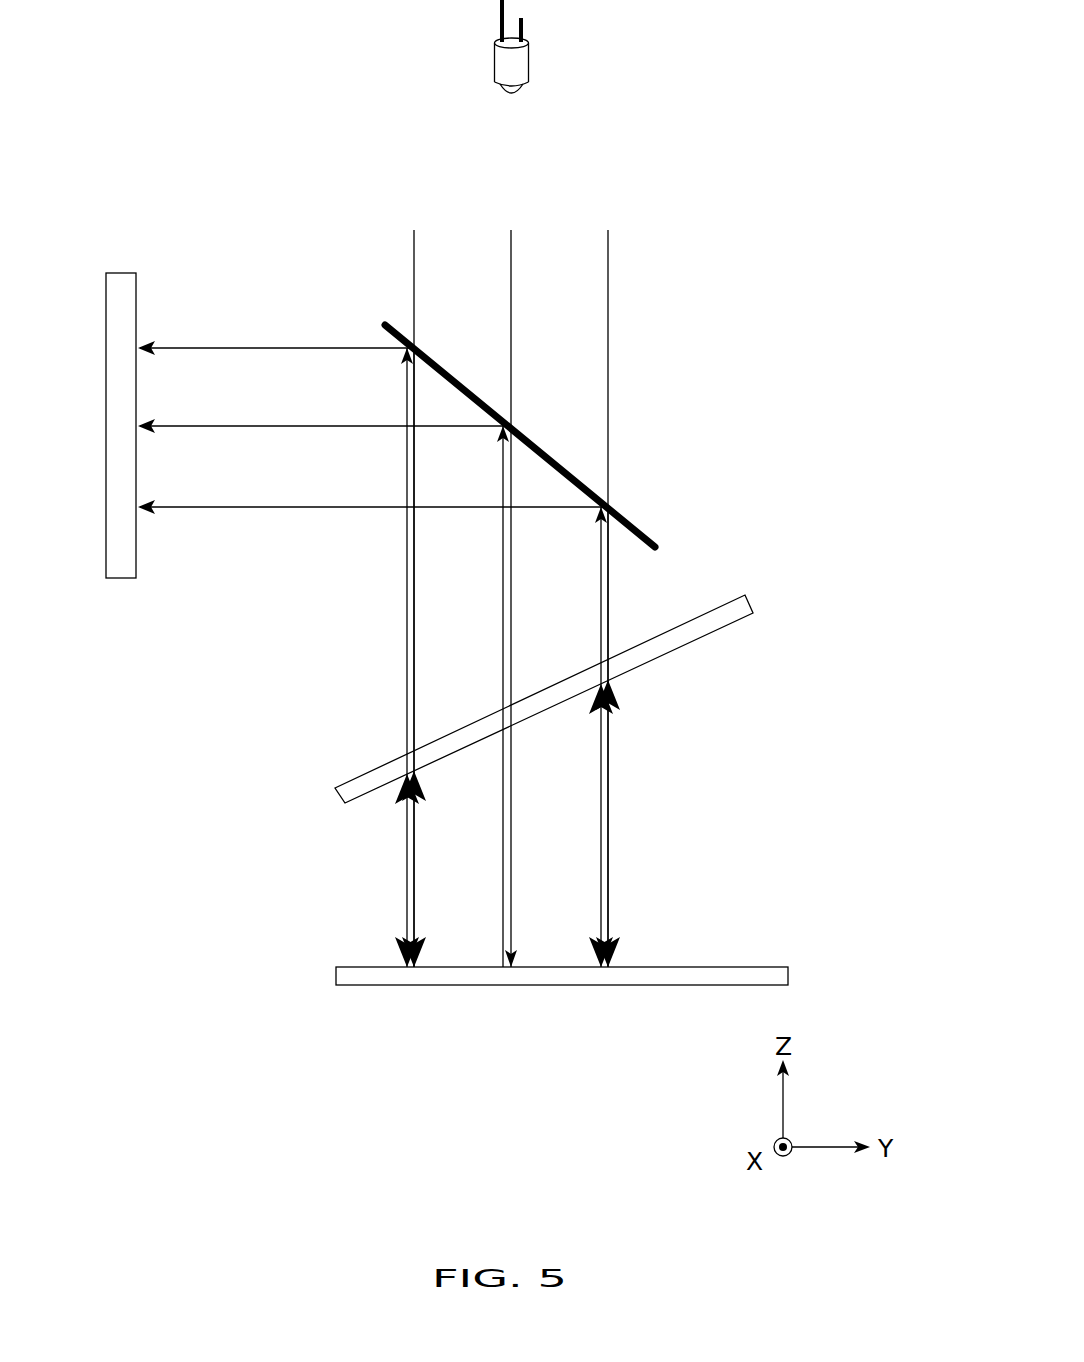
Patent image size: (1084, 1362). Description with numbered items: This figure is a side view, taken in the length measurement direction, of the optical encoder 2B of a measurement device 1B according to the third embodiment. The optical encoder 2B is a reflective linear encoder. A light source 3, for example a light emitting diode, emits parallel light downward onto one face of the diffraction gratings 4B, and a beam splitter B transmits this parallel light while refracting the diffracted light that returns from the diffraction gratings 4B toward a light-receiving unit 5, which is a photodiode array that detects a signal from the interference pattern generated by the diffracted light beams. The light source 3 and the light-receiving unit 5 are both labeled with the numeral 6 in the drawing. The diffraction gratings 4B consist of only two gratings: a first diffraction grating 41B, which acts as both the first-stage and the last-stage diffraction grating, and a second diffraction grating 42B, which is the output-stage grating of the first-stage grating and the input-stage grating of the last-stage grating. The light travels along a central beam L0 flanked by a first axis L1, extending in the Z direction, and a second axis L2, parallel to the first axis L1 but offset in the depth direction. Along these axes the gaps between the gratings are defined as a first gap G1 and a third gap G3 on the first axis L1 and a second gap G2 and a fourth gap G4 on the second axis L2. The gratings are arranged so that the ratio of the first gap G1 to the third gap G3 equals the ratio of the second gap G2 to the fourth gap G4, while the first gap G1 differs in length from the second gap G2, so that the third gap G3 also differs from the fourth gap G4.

The measurement device 1B is at (272, 108).
The optical encoder 2B is at (218, 175).
The light source 3 is at (530, 60).
The optical element 6 is at (357, 337).
The light-receiving unit 5 is at (116, 580).
The beam splitter B is at (658, 545).
The zeroth light beam L0 is at (509, 580).
The first axis L1 is at (612, 580).
The second axis L2 is at (409, 580).
The first gap G1 is at (629, 737).
The second gap G2 is at (434, 657).
The third gap G3 is at (586, 737).
The fourth gap G4 is at (391, 657).
The diffraction gratings 4B is at (565, 825).
The first diffraction grating 41B is at (725, 625).
The second diffraction grating 42B is at (641, 986).